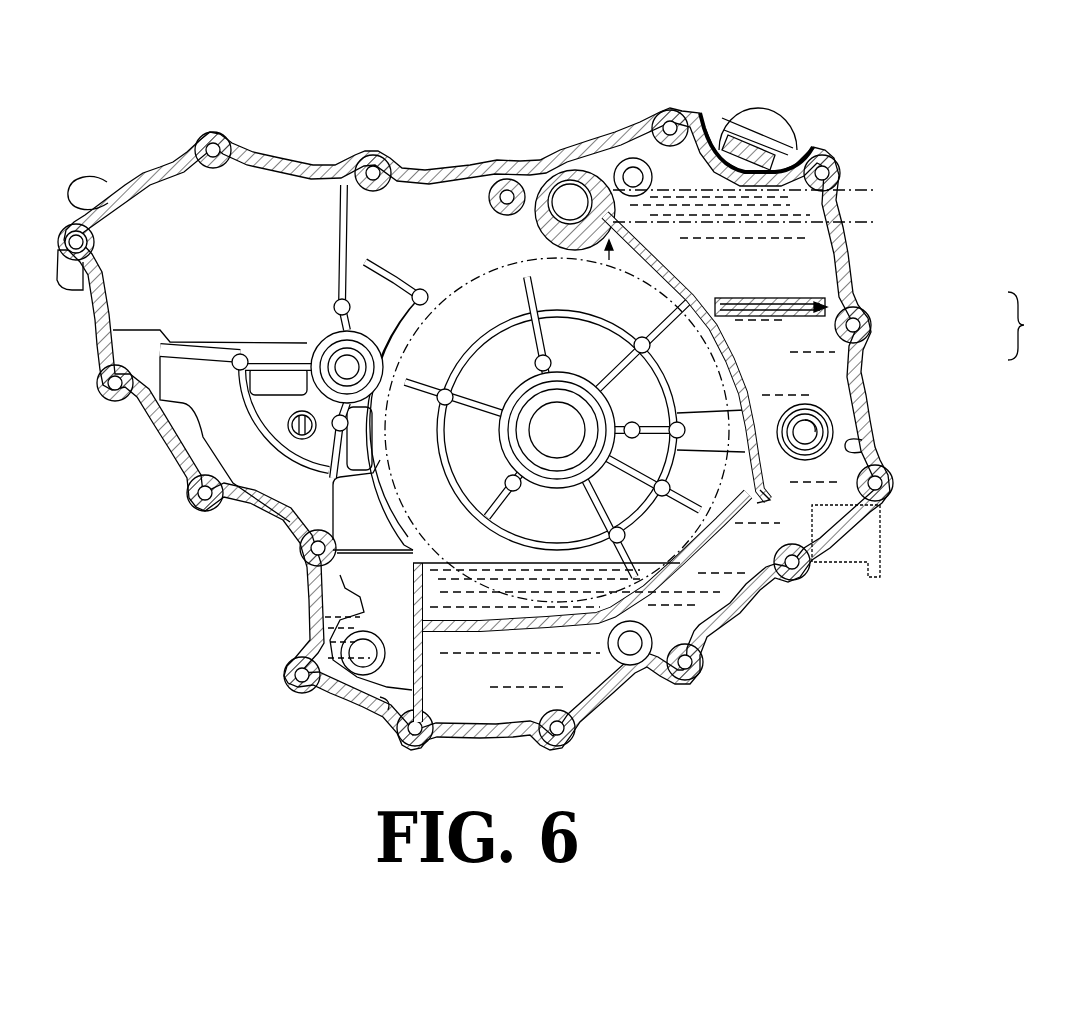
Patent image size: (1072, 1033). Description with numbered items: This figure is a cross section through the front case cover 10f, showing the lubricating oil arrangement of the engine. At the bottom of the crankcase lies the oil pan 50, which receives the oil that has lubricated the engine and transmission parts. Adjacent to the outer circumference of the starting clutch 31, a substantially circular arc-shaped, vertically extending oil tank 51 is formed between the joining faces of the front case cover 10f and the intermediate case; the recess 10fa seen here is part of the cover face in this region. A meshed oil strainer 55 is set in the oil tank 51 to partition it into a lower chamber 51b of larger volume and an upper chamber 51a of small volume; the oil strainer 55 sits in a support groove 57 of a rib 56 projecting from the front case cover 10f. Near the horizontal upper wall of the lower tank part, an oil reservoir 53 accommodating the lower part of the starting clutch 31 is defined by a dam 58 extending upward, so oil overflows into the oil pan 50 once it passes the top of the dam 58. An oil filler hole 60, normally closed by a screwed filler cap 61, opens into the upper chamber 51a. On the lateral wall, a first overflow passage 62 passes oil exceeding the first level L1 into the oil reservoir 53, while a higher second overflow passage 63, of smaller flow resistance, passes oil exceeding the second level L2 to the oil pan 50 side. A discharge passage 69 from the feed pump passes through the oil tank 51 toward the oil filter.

The front case cover 10f is at (521, 178).
The recess of cover 10fa is at (862, 450).
The starting clutch 31 is at (527, 262).
The oil pan 50 is at (384, 700).
The oil tank 51 is at (1031, 326).
The upper chamber 51a is at (820, 277).
The lower chamber 51b is at (835, 373).
The oil reservoir 53 is at (520, 617).
The oil strainer 55 is at (756, 312).
The rib 56 is at (700, 300).
The support groove 57 is at (820, 310).
The dam 58 is at (413, 586).
The oil filler hole 60 is at (747, 122).
The filler cap 61 is at (775, 120).
The first overflow passage 62 is at (607, 225).
The second overflow passage 63 is at (648, 140).
The discharge passage 69 is at (828, 425).
The first level L1 is at (850, 222).
The second level L2 is at (850, 190).